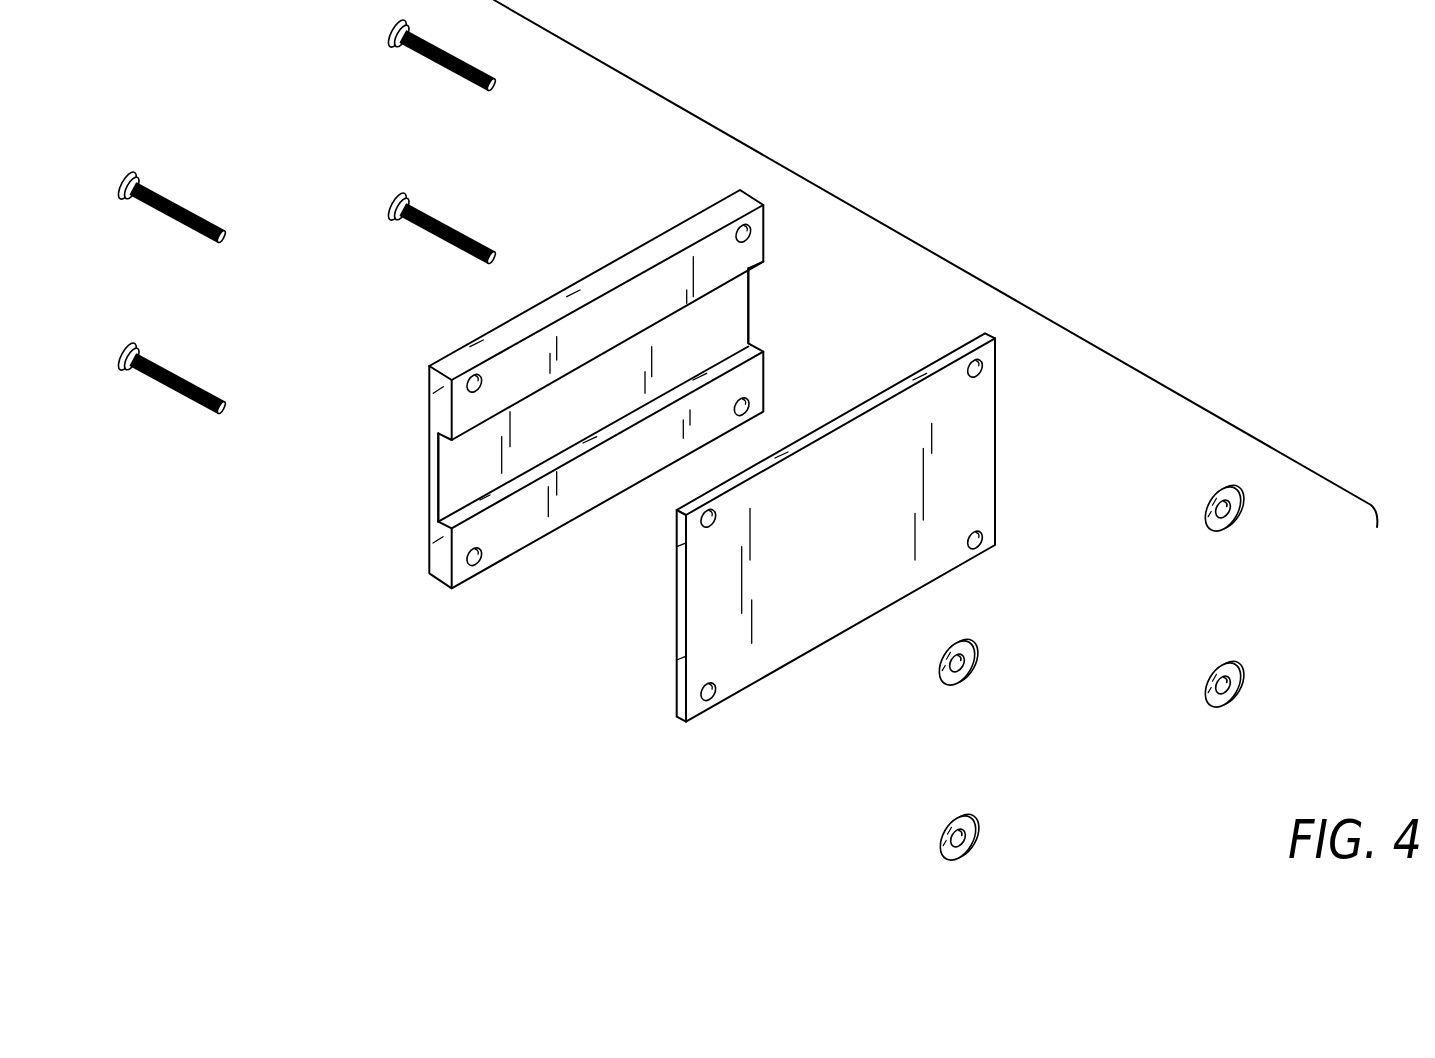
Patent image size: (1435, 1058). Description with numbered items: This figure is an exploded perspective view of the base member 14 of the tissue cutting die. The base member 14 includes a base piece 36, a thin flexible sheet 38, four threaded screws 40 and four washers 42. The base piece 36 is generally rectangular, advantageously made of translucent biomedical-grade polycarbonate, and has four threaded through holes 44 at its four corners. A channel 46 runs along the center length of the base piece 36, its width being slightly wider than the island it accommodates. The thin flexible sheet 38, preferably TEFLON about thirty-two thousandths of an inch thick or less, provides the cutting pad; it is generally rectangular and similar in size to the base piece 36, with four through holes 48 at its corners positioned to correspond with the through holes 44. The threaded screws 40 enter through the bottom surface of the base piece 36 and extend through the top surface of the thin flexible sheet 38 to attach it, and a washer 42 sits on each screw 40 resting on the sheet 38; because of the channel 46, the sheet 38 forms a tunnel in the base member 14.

The base member 14 is at (976, 276).
The base piece 36 is at (630, 303).
The thin flexible sheet 38 is at (812, 595).
The threaded screws 40 is at (425, 57).
The washers 42 is at (973, 667).
The threaded through holes 44 is at (467, 391).
The channel 46 is at (718, 329).
The through holes 48 is at (707, 527).